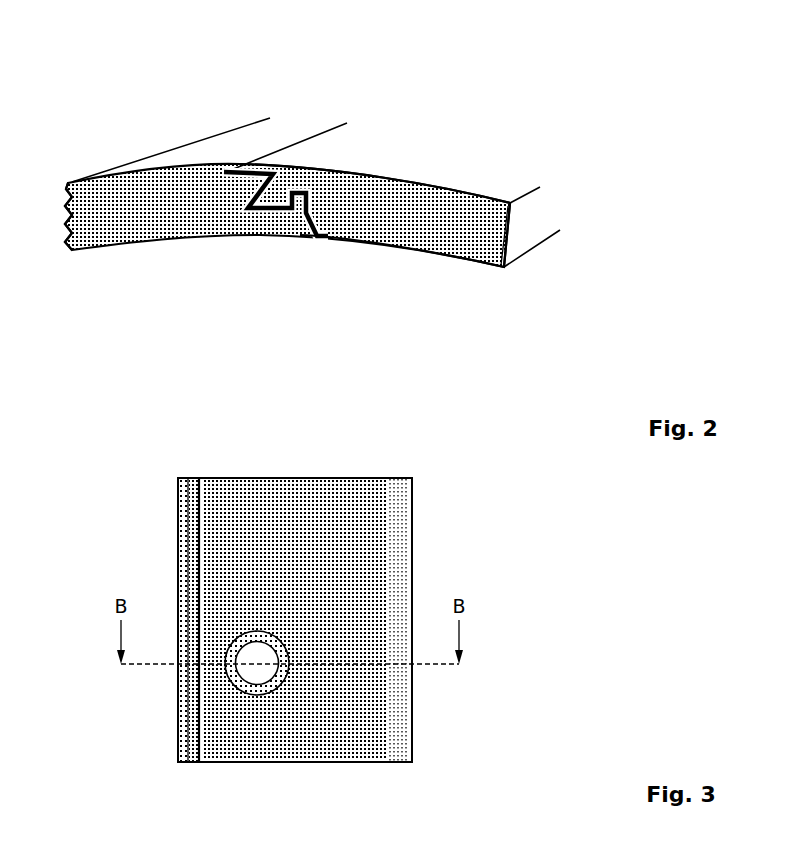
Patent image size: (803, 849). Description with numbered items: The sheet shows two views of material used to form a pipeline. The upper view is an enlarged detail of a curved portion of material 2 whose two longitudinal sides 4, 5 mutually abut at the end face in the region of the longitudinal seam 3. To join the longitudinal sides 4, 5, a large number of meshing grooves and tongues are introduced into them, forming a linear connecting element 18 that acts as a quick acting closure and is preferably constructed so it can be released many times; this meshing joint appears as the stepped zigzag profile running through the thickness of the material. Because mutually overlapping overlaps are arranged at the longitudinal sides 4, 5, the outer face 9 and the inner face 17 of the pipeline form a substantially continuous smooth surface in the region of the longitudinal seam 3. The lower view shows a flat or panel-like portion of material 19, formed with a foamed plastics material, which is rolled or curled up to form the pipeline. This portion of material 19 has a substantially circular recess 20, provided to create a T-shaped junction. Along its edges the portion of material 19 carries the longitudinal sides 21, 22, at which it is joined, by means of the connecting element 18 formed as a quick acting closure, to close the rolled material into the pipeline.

In FIG. 2, the portion of material 2 is at (513, 222).
In FIG. 2, the longitudinal seam 3 is at (303, 137).
In FIG. 2, the longitudinal side 4 is at (183, 209).
In FIG. 2, the longitudinal side 5 is at (351, 211).
In FIG. 2, the outer face 9 is at (482, 158).
In FIG. 2, the inner face 17 is at (408, 256).
In FIG. 2, the connecting element 18 is at (354, 72).
In FIG. 3, the portion of material 19 is at (293, 497).
In FIG. 3, the recess 20 is at (265, 672).
In FIG. 3, the longitudinal side 21 is at (183, 466).
In FIG. 3, the longitudinal side 22 is at (407, 468).